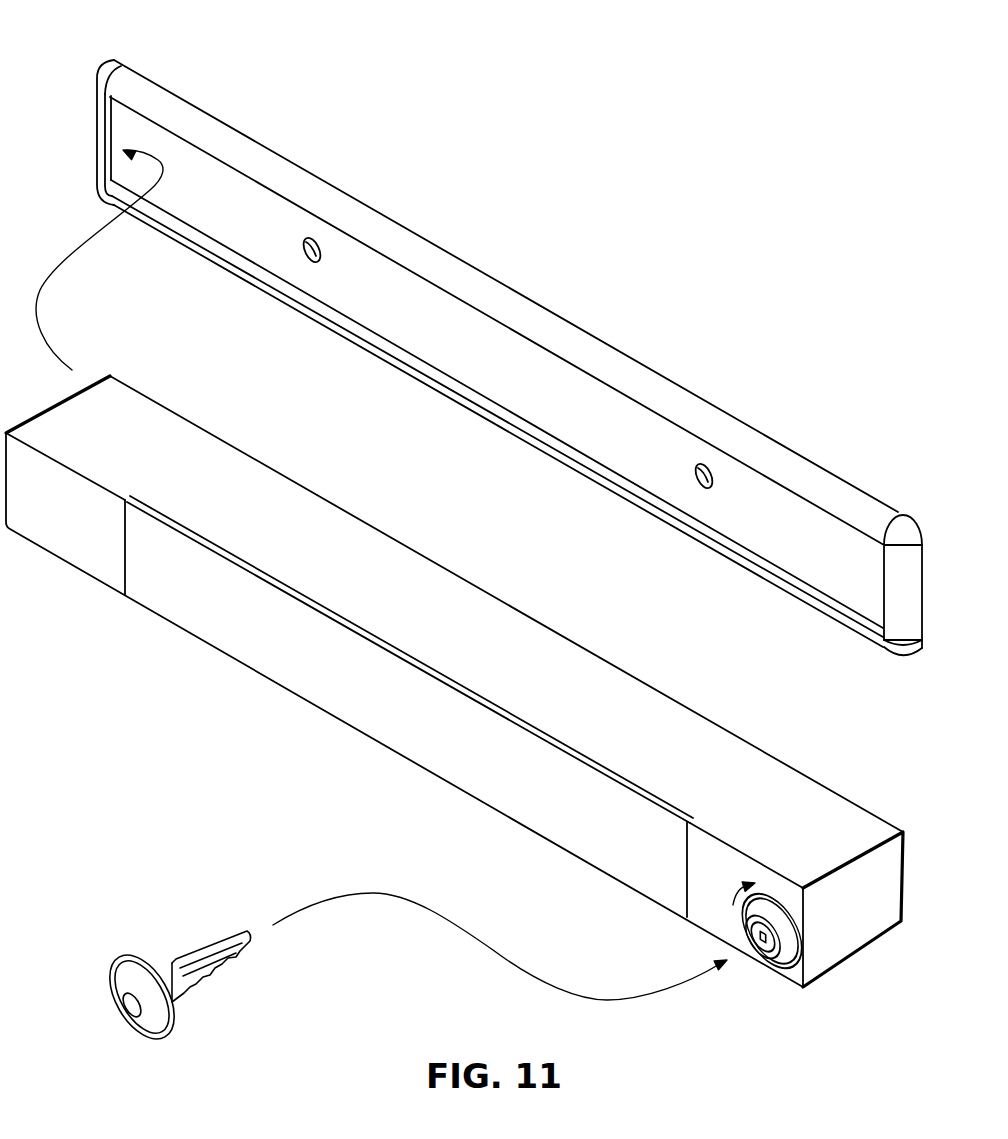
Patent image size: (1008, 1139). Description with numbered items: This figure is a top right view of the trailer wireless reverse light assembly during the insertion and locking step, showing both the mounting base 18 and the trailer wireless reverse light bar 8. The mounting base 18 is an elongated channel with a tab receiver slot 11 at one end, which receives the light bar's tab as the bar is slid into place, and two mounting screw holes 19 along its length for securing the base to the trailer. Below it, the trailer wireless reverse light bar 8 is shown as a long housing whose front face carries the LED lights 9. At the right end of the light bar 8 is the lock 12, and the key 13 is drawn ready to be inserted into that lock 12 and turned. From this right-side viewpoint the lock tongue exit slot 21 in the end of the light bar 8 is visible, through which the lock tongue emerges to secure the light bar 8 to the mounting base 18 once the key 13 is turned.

The trailer wireless reverse light bar 8 is at (485, 591).
The LED lights 9 is at (367, 735).
The tab receiver slot 11 is at (118, 138).
The lock 12 is at (782, 893).
The key 13 is at (200, 983).
The mounting base 18 is at (548, 308).
The mounting screw holes 19 is at (308, 240).
The lock tongue exit slot 21 is at (893, 912).